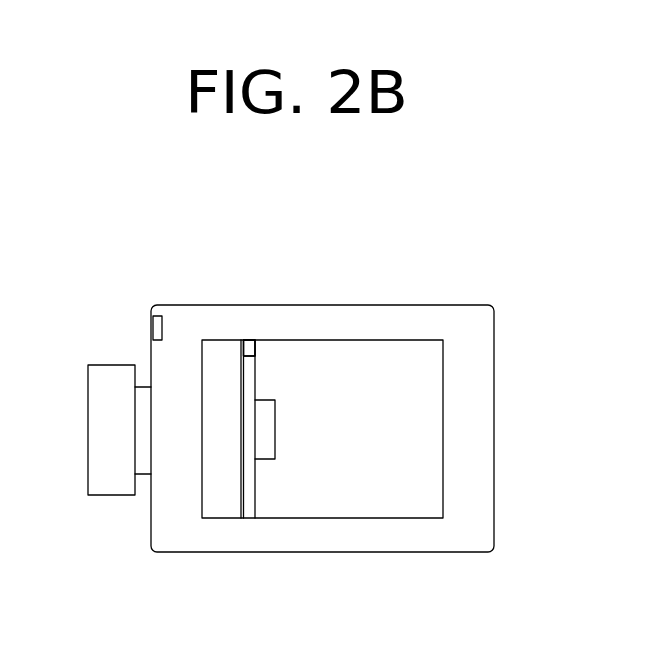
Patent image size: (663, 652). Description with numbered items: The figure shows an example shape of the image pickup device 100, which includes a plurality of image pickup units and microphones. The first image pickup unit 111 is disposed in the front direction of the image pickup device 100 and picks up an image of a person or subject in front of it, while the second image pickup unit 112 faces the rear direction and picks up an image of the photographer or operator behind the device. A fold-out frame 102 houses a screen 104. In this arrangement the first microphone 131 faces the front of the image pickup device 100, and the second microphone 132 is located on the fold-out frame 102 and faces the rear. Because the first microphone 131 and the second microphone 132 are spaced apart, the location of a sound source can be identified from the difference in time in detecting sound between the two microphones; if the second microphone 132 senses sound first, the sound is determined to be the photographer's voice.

The image pickup device 100 is at (407, 305).
The fold-out frame 102 is at (212, 512).
The screen 104 is at (252, 502).
The first image pickup unit 111 is at (88, 428).
The second image pickup unit 112 is at (250, 348).
The first microphone 131 is at (152, 322).
The second microphone 132 is at (246, 302).